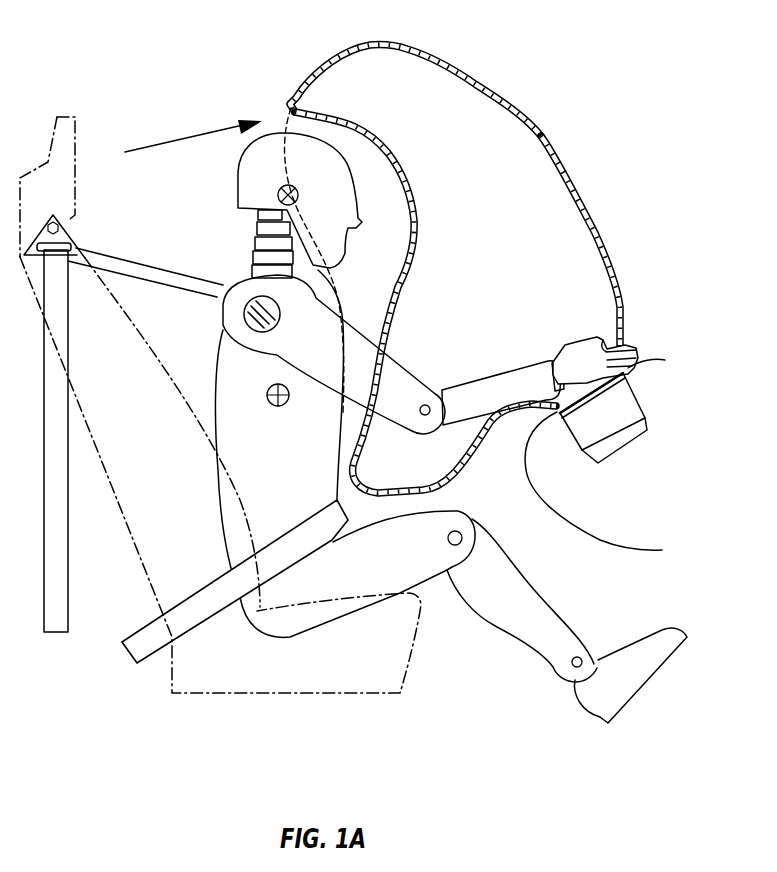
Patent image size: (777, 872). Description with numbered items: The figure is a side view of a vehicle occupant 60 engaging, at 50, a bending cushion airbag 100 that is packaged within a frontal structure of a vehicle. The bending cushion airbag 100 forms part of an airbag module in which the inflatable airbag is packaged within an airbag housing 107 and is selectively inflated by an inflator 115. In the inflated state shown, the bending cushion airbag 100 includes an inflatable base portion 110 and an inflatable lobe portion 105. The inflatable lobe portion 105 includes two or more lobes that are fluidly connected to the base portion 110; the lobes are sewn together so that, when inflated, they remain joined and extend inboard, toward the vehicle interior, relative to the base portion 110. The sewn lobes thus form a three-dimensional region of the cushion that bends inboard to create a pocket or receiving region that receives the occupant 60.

The engagement location 50 is at (148, 87).
The vehicle occupant 60 is at (290, 448).
The bending cushion airbag 100 is at (464, 269).
The inflatable lobe portion 105 is at (389, 103).
The inflatable base portion 110 is at (515, 271).
The airbag housing 107 is at (636, 389).
The inflator 115 is at (627, 452).